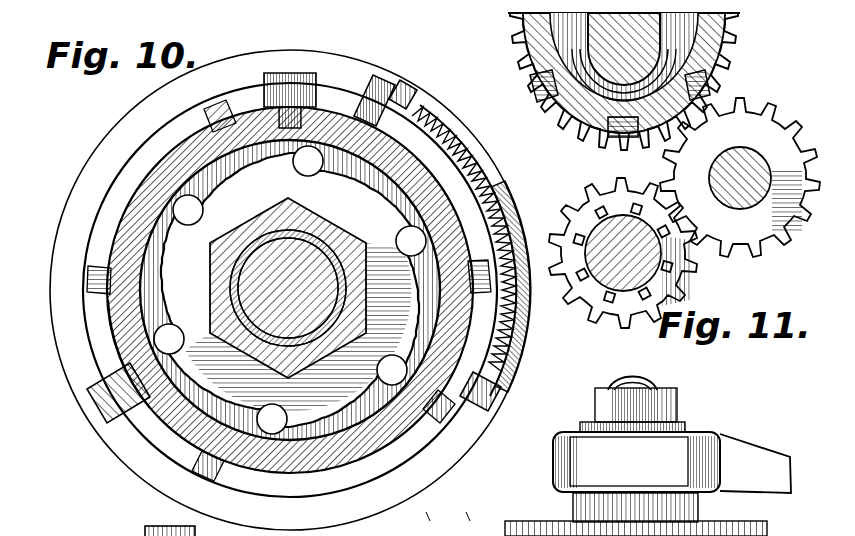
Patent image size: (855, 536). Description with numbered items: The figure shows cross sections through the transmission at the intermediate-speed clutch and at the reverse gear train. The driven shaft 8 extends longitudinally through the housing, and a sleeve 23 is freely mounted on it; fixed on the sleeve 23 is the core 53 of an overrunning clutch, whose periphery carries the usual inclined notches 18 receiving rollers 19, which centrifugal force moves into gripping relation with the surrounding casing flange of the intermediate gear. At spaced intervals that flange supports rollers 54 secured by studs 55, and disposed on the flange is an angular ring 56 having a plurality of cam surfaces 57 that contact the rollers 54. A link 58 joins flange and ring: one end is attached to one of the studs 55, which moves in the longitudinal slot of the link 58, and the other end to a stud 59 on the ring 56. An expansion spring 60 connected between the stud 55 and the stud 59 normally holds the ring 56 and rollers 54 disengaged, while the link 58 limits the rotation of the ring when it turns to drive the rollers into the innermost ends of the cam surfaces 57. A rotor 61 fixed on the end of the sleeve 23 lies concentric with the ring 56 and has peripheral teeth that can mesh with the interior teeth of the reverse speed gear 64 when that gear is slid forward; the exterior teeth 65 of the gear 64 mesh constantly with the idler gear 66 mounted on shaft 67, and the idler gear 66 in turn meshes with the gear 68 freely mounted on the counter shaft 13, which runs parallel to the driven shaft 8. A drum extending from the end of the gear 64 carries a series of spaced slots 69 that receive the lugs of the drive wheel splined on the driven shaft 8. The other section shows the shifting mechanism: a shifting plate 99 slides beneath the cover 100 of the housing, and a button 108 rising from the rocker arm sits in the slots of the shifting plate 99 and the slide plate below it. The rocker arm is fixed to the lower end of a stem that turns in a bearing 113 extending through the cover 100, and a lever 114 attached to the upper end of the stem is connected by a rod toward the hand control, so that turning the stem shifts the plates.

In FIG. 10, the driven shaft 8 is at (312, 252).
In FIG. 11, the driven shaft 8 is at (612, 33).
In FIG. 11, the counter shaft 13 is at (603, 272).
In FIG. 10, the inclined notches 18 is at (117, 337).
In FIG. 10, the rollers 19 is at (173, 347).
In FIG. 10, the sleeve 23 is at (213, 275).
In FIG. 10, the core 53 is at (123, 222).
In FIG. 10, the rollers 54 is at (265, 90).
In FIG. 10, the studs 55 is at (300, 73).
In FIG. 10, the angular ring 56 is at (142, 458).
In FIG. 10, the cam surfaces 57 is at (380, 445).
In FIG. 10, the link 58 is at (447, 150).
In FIG. 10, the stud 59 is at (407, 92).
In FIG. 10, the expansion spring 60 is at (503, 214).
In FIG. 10, the rotor 61 is at (167, 243).
In FIG. 11, the reverse speed gear 64 is at (524, 43).
In FIG. 11, the exterior teeth 65 is at (736, 57).
In FIG. 11, the idler gear 66 is at (761, 120).
In FIG. 11, the shaft 67 is at (749, 172).
In FIG. 11, the gear 68 is at (684, 291).
In FIG. 11, the key block 69 is at (617, 140).
In FIG. 10, the shifting plate 99 is at (433, 524).
In FIG. 10, the cover 100 is at (392, 512).
In FIG. 10, the button 108 is at (472, 524).
In FIG. 11, the bearing 113 is at (573, 506).
In FIG. 11, the lever 114 is at (785, 437).